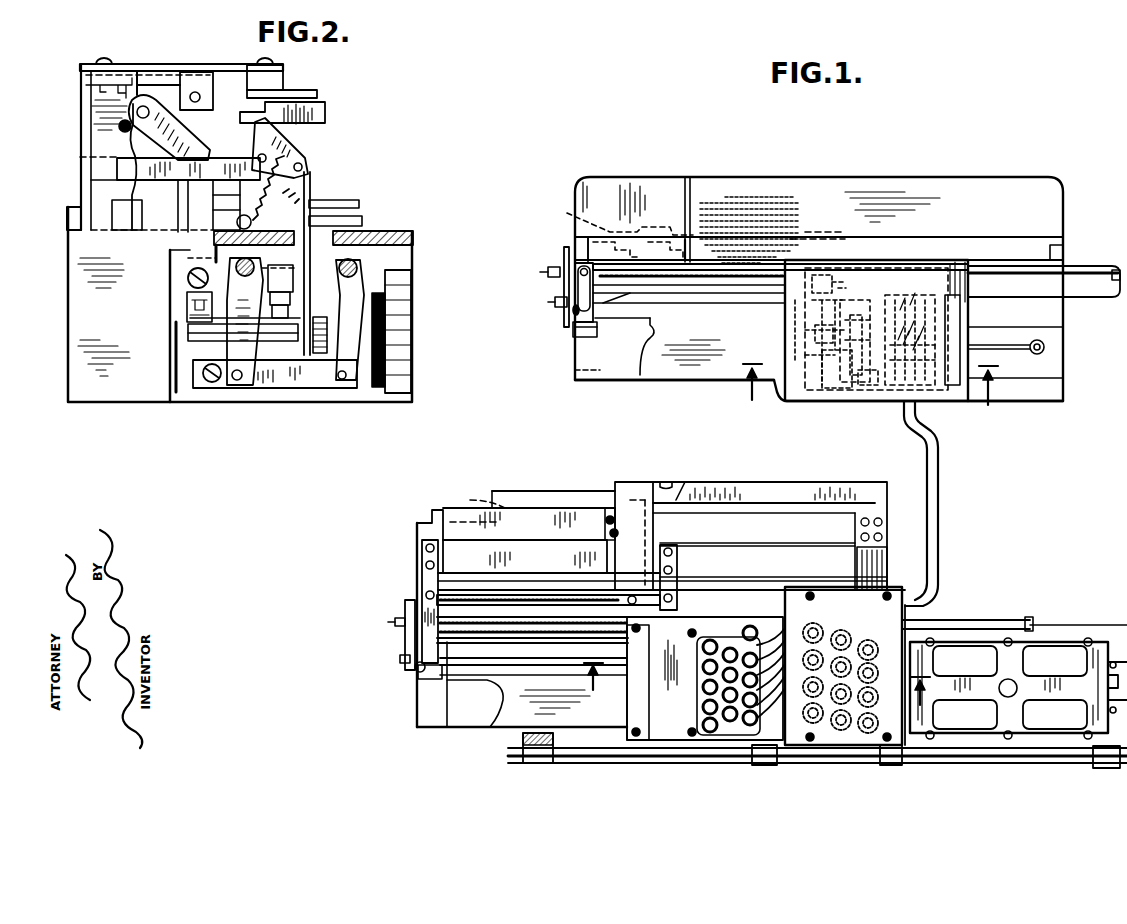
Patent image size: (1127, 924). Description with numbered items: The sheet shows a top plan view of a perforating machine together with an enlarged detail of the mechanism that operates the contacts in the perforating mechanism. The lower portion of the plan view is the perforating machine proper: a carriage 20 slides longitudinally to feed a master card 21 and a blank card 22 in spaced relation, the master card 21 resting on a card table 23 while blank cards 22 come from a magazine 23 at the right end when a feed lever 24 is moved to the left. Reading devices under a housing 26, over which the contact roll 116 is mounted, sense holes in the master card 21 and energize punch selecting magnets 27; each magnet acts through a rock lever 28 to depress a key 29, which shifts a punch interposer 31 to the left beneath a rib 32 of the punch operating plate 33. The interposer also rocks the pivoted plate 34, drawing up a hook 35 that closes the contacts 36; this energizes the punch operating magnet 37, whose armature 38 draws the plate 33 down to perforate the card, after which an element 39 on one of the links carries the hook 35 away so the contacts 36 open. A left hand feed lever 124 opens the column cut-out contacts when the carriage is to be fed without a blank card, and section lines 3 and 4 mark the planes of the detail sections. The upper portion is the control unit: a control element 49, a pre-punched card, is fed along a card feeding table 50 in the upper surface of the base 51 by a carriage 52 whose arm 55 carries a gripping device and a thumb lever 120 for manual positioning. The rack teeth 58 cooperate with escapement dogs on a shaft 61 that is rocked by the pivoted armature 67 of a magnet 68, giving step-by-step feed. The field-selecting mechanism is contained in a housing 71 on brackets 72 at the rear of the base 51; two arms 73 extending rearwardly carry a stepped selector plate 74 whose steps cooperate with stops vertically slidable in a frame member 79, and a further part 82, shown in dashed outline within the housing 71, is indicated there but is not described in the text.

In FIG. 1, the section line 3- 3 is at (757, 674).
In FIG. 1, the section line 4- 4 is at (870, 375).
In FIG. 1, the carriage 20 is at (428, 583).
In FIG. 1, the master card 21 is at (462, 505).
In FIG. 1, the blank card 22 is at (445, 659).
In FIG. 1, the card table 23 is at (552, 555).
In FIG. 1, the feed lever 24 is at (817, 763).
In FIG. 1, the housing 26 is at (638, 494).
In FIG. 1, the punch selecting magnets 27 is at (845, 650).
In FIG. 1, the rock lever 28 is at (780, 636).
In FIG. 1, the key 29 is at (748, 652).
In FIG. 2, the punch interposer 31 is at (305, 122).
In FIG. 2, the rib 32 is at (98, 96).
In FIG. 2, the punch operating plate 33 is at (156, 83).
In FIG. 2, the pivoted plate 34 is at (256, 130).
In FIG. 2, the hook 35 is at (307, 218).
In FIG. 2, the contacts 36 is at (268, 310).
In FIG. 2, the punch operating magnet 37 is at (393, 360).
In FIG. 2, the armature 38 is at (340, 290).
In FIG. 2, the element 39 is at (288, 348).
In FIG. 1, the control element 49 is at (569, 385).
In FIG. 1, the card feeding table 50 is at (1010, 368).
In FIG. 1, the base 51 is at (1052, 402).
In FIG. 1, the carriage 52 is at (580, 324).
In FIG. 1, the arm 55 is at (648, 340).
In FIG. 1, the teeth 58 is at (712, 282).
In FIG. 1, the shaft 61 is at (822, 365).
In FIG. 1, the pivoted armature 67 is at (873, 357).
In FIG. 1, the magnet 68 is at (895, 378).
In FIG. 1, the housing 71 is at (957, 195).
In FIG. 1, the brackets 72 is at (580, 248).
In FIG. 1, the arms 73 is at (683, 245).
In FIG. 1, the stepped selector plate 74 is at (580, 220).
In FIG. 1, the frame member 79 is at (830, 232).
In FIG. 1, the printing field 82 is at (782, 195).
In FIG. 1, the contact roll 116 is at (676, 508).
In FIG. 1, the thumb lever 120 is at (575, 290).
In FIG. 1, the left hand feed lever 124 is at (430, 640).